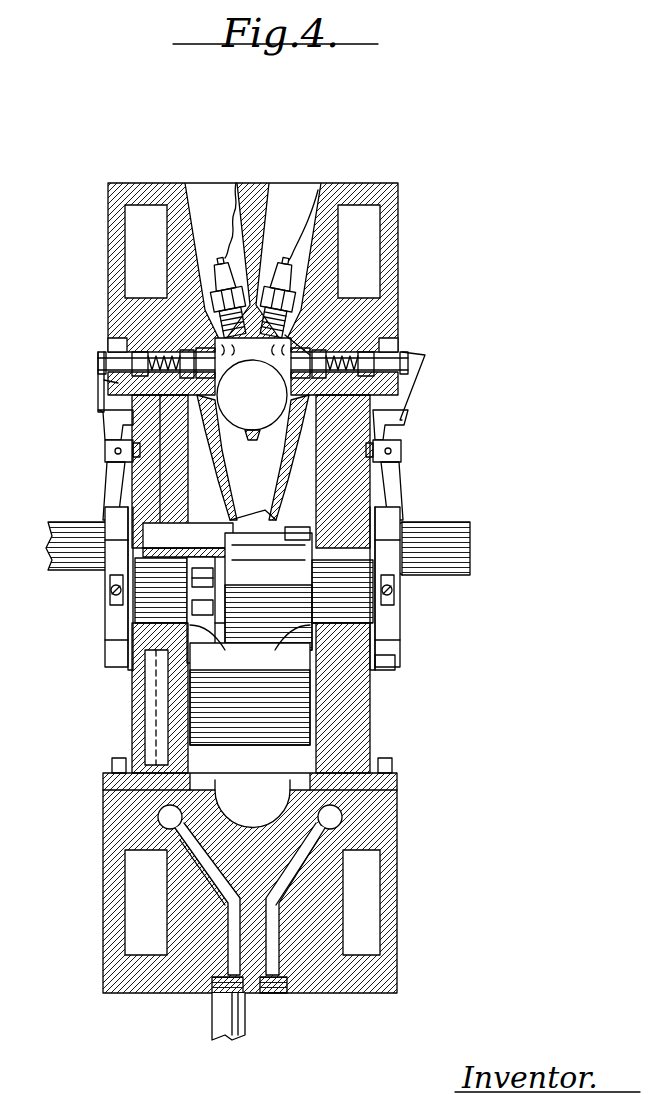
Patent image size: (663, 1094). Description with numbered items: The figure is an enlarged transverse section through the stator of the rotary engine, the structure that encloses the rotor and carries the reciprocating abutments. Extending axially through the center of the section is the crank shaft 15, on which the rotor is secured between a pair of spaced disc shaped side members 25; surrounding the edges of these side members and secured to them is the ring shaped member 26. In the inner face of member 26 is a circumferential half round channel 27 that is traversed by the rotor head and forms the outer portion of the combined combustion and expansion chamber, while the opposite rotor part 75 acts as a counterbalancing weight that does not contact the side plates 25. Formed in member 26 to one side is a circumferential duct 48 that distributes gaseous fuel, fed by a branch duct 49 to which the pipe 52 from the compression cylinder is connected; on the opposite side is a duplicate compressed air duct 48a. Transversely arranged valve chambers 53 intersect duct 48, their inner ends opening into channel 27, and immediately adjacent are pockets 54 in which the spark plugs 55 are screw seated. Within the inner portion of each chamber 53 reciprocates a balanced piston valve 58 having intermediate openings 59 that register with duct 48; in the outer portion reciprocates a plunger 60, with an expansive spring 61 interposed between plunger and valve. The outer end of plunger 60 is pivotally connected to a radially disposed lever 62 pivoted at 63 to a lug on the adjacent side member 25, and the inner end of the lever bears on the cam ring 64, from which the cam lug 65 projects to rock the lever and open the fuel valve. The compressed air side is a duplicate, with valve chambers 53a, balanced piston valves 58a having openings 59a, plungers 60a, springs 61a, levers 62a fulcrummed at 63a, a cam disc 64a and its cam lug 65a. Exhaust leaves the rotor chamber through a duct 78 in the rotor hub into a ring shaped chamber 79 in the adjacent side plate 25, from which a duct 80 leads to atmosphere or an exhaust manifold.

The shaft 15 is at (440, 560).
The side member 25 is at (372, 725).
The ring shaped member 26 is at (110, 828).
The half round channel 27 is at (246, 824).
The circumferential duct 48 is at (166, 822).
The compressed air duct 48a is at (334, 822).
The branch duct 49 is at (228, 963).
The pipe 52 is at (226, 1042).
The valve chamber 53 is at (108, 320).
The valve chamber 53a is at (398, 340).
The pocket 54 is at (236, 183).
The spark plug 55 is at (223, 286).
The balanced piston valve 58 is at (104, 400).
The balanced piston valve 58a is at (312, 352).
The opening 59 is at (222, 380).
The opening 59a is at (398, 310).
The plunger 60 is at (100, 362).
The plunger 60a is at (410, 360).
The expansive spring 61 is at (100, 383).
The expansive spring 61a is at (392, 375).
The lever 62 is at (105, 428).
The lever 62a is at (406, 428).
The pivot 63 is at (108, 455).
The fulcrum 63a is at (396, 460).
The cam ring 64 is at (110, 630).
The cam disc 64a is at (398, 634).
The cam lug 65 is at (110, 518).
The cam lug 65a is at (396, 664).
The rotor part 75 is at (232, 720).
The duct 78 is at (110, 658).
The ring shaped chamber 79 is at (185, 510).
The duct 80 is at (142, 727).